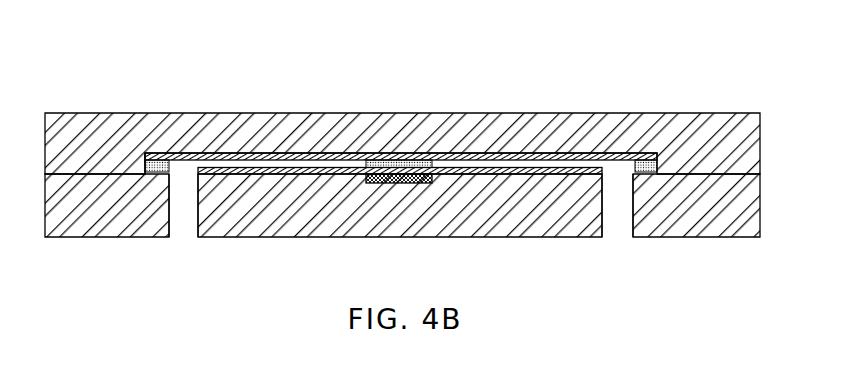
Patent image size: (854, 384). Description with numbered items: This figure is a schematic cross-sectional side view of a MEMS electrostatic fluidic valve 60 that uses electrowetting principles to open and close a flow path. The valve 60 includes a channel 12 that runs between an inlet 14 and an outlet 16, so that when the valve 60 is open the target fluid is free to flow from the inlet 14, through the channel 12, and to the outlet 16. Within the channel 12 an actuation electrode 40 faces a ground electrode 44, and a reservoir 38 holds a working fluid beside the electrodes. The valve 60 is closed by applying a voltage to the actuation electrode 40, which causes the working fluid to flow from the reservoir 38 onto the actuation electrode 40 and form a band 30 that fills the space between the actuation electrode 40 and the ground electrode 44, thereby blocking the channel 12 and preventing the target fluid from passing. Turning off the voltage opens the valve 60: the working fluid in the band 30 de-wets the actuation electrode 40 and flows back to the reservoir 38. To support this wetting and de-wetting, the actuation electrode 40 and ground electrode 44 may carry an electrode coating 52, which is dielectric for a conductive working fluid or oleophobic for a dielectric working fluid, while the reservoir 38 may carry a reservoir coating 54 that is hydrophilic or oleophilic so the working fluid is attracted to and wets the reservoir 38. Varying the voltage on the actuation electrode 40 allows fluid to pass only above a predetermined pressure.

The channel 12 is at (551, 153).
The inlet 14 is at (182, 193).
The outlet 16 is at (610, 188).
The band 30 is at (378, 162).
The reservoir 38 is at (648, 153).
The actuation electrode 40 is at (407, 184).
The ground electrode 44 is at (292, 153).
The electrode coating 52 is at (207, 158).
The reservoir coating 54 is at (134, 160).
The MEMS electrostatic fluidic valve 60 is at (683, 63).